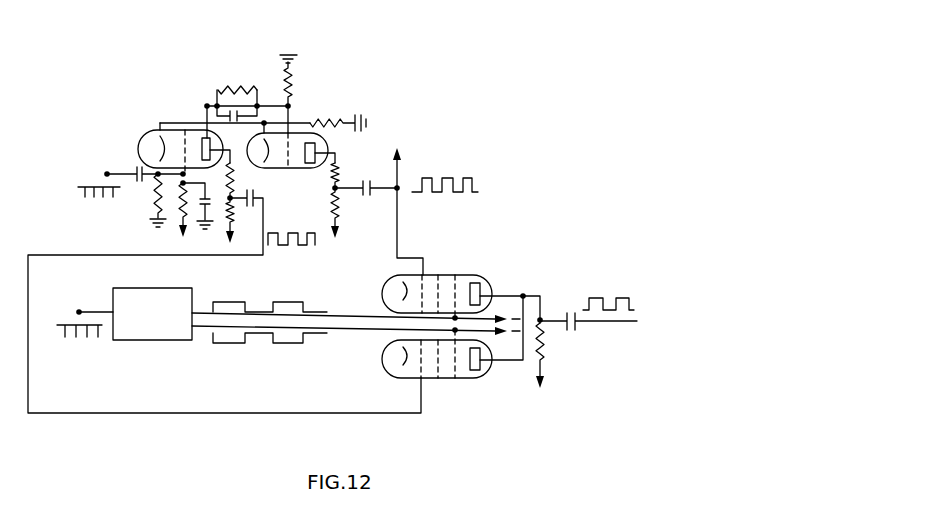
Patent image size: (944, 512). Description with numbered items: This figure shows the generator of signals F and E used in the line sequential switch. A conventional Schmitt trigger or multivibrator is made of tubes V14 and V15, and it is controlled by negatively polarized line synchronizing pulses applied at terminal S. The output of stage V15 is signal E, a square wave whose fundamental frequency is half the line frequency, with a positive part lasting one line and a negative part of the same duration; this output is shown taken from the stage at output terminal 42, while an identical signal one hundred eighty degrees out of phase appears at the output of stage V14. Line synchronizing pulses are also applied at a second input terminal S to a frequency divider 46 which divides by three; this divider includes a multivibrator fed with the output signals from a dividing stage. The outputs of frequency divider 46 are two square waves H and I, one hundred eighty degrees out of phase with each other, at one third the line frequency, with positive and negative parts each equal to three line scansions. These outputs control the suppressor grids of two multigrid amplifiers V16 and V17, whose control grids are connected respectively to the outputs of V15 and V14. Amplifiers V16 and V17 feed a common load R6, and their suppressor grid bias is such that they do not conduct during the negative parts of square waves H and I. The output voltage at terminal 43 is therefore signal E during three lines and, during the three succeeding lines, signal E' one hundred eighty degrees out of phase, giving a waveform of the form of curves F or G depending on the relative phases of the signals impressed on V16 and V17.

The tube V14 is at (163, 140).
The tube V15 is at (309, 145).
The multigrid amplifier V16 is at (452, 286).
The multigrid amplifier V17 is at (452, 349).
The output terminal (pulse output) 42 is at (435, 209).
The frequency divider 46 is at (163, 339).
The common load R6 is at (550, 352).
The terminal 43 is at (590, 321).
The terminal S is at (119, 248).
The square wave H is at (356, 306).
The square wave I is at (356, 342).